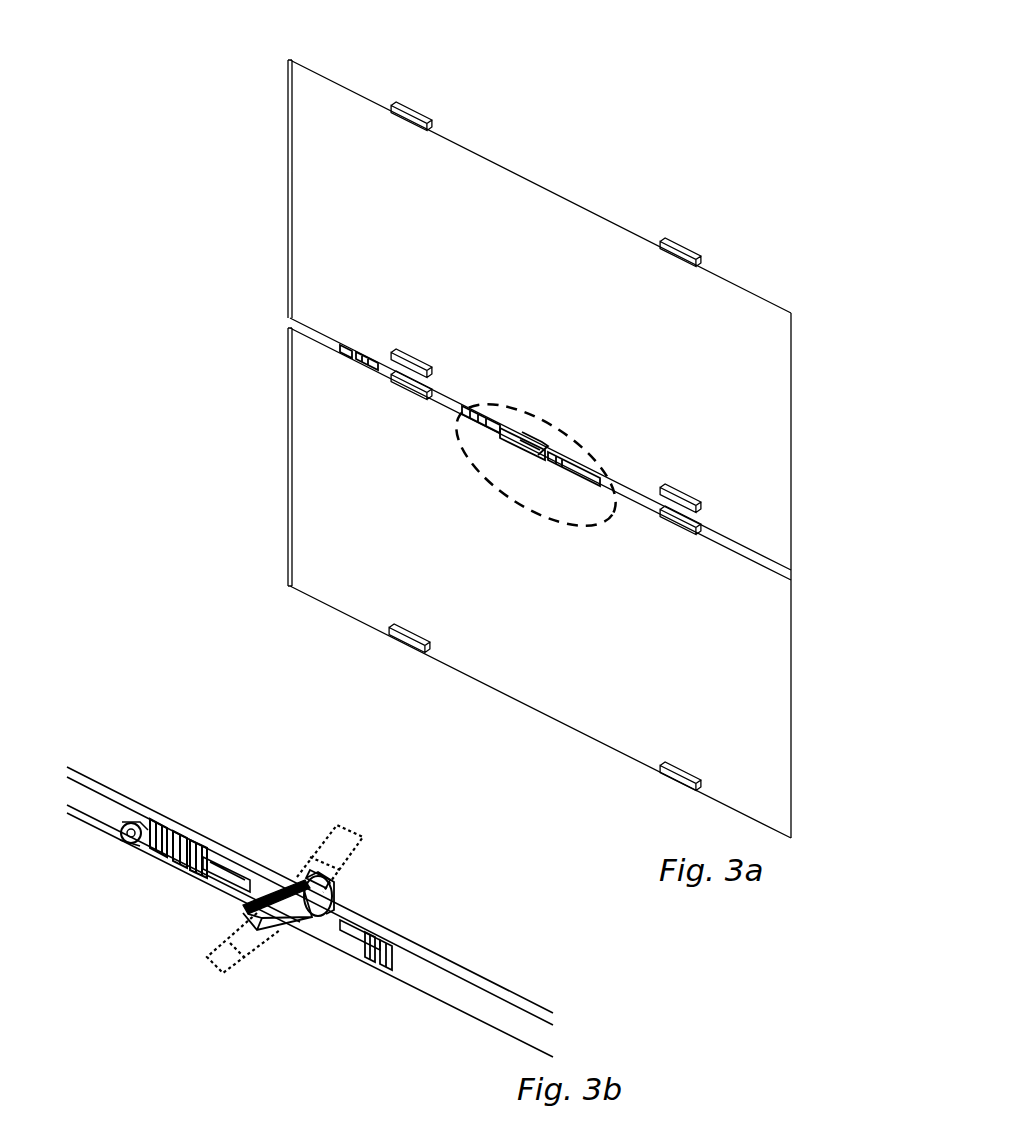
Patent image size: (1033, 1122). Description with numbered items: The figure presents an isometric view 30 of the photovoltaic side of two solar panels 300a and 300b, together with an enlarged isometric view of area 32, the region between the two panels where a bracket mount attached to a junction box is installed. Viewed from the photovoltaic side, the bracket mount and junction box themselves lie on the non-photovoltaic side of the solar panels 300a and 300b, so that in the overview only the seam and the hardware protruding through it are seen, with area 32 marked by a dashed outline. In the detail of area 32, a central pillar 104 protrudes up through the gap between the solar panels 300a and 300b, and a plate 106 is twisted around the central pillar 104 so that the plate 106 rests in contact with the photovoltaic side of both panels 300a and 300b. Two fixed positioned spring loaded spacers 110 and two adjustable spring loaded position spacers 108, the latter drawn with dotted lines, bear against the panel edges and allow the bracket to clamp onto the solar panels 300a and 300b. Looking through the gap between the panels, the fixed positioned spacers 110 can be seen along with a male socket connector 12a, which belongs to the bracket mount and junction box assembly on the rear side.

In FIG. 3A, the solar panel 300a is at (318, 278).
In FIG. 3A, the solar panel 300b is at (316, 487).
In FIG. 3A, the isometric view 30 is at (232, 629).
In FIG. 3A, the area 32 is at (521, 496).
In FIG. 3B, the area 32 is at (289, 963).
In FIG. 3B, the male socket connector 12a is at (135, 836).
In FIG. 3B, the central pillar 104 is at (312, 897).
In FIG. 3B, the plate 106 is at (340, 897).
In FIG. 3B, the adjustable spring loaded position spacers 108 is at (366, 836).
In FIG. 3B, the fixed positioned spring loaded spacers 110 is at (372, 947).